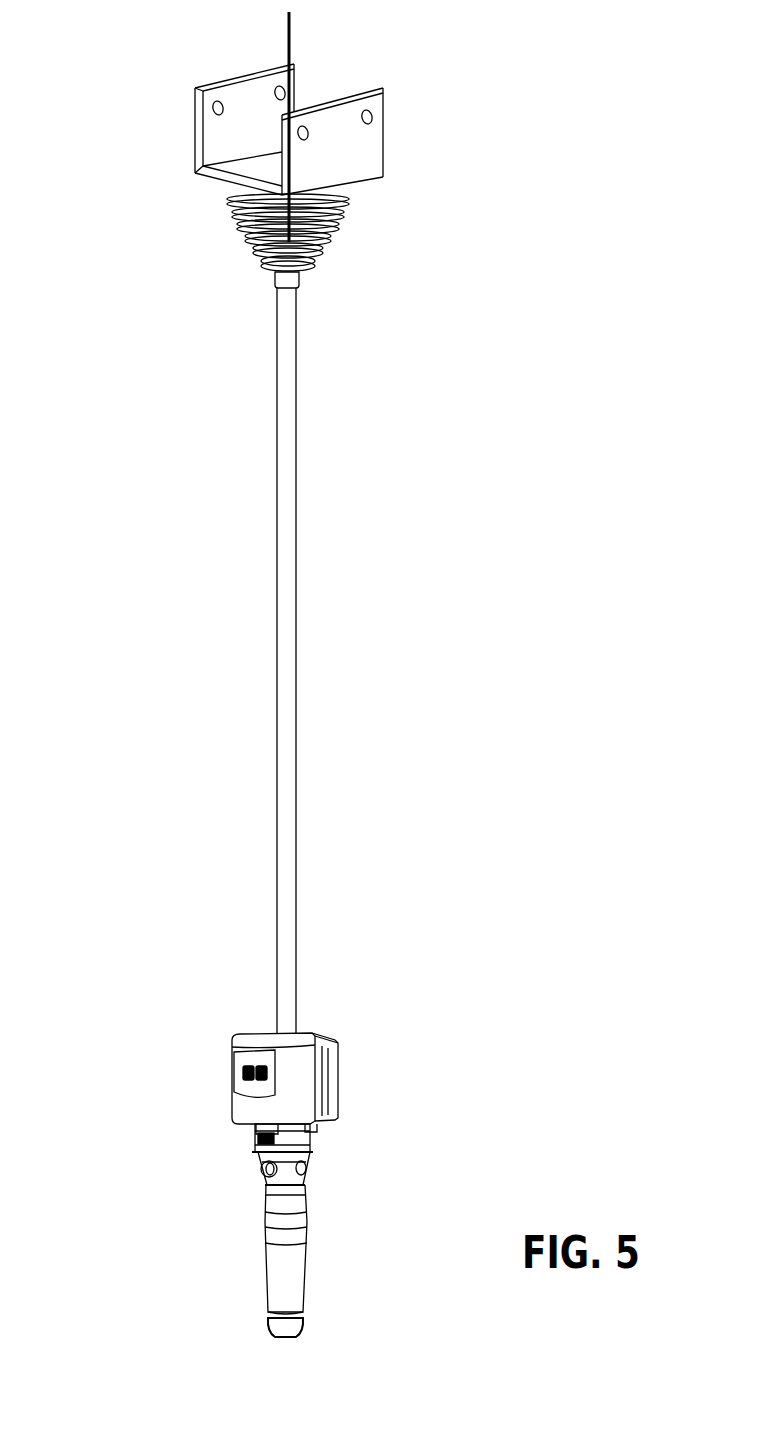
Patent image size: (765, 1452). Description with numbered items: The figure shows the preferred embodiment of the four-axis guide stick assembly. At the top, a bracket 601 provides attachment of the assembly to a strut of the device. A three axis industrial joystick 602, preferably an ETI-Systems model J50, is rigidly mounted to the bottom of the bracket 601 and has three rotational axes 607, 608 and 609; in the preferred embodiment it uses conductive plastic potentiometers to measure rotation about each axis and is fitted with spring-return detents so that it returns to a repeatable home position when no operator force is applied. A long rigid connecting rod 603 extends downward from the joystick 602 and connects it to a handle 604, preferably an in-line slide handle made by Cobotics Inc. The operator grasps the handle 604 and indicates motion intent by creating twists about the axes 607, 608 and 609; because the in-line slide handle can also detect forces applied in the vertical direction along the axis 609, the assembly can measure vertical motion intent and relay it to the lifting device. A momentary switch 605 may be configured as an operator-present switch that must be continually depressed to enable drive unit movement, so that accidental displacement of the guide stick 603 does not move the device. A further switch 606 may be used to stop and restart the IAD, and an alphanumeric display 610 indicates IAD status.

The bracket 601 is at (353, 147).
The three axis industrial joystick 602 is at (352, 218).
The rigid connecting rod 603 is at (303, 700).
The handle 604 is at (325, 1213).
The momentary switch 605 is at (260, 1173).
The switch 606 is at (257, 1133).
The rotational axis 607 is at (288, 241).
The rotational axis 608 is at (288, 241).
The rotational axis 609 is at (315, 121).
The alphanumeric display 610 is at (240, 1070).